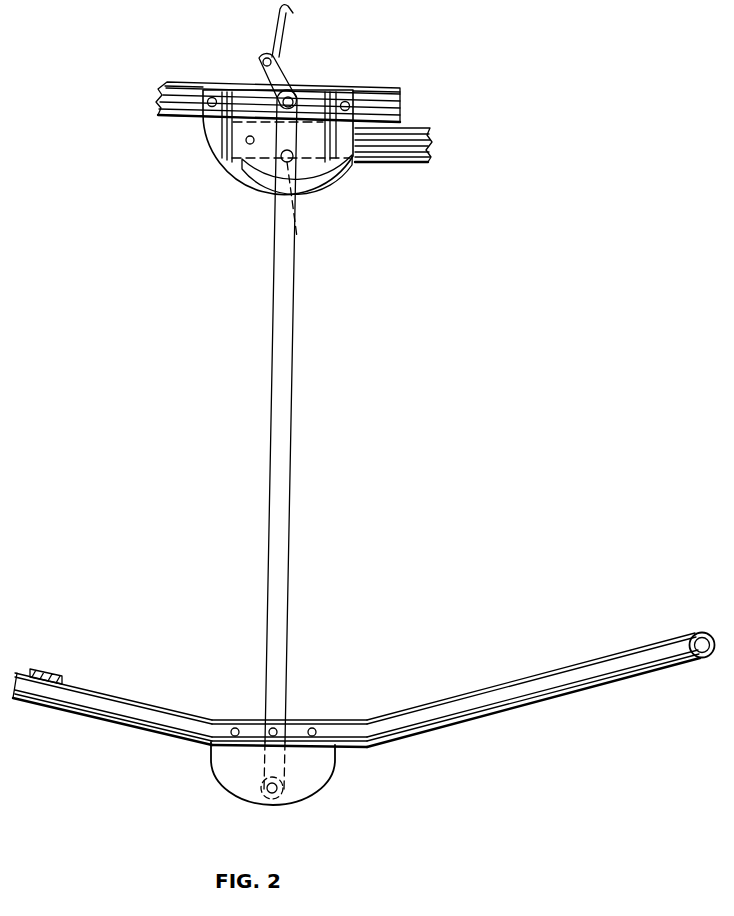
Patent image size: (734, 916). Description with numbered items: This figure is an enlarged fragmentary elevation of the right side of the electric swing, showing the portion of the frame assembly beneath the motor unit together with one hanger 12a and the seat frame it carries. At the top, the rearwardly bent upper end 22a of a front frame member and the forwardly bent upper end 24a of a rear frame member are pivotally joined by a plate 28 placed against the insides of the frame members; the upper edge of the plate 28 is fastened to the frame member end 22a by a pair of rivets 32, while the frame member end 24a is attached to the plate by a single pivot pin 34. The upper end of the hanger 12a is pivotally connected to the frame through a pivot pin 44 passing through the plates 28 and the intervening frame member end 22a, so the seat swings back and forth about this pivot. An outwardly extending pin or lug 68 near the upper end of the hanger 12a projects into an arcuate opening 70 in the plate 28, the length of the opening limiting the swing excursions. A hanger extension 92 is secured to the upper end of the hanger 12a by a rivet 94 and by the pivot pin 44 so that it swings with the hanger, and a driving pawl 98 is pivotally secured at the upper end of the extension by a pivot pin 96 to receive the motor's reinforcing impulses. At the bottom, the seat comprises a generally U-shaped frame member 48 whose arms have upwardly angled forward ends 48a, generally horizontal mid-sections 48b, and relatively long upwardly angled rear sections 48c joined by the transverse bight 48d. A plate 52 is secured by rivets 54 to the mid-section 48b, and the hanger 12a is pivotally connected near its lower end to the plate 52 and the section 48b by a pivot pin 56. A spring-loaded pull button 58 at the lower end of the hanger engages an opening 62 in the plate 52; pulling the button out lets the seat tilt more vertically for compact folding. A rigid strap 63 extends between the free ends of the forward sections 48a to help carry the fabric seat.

The hanger 12a is at (282, 473).
The upper end of front frame member 22a is at (168, 92).
The upper end of rear frame member 24a is at (400, 143).
The plate 28 is at (237, 172).
The rivets 32 is at (211, 97).
The pivot pin 34 is at (246, 142).
The pivot pin 44 is at (292, 98).
The U-shaped frame member 48 is at (364, 669).
The forward end of frame member 48a is at (147, 700).
The mid-section of frame member 48b is at (348, 720).
The rear section of frame member 48c is at (538, 677).
The transverse bight 48d is at (690, 630).
The plate 52 is at (218, 756).
The rivets 54 is at (235, 727).
The pivot pin 56 is at (275, 728).
The spring-loaded pull button 58 is at (261, 788).
The opening 62 is at (264, 797).
The rigid strap 63 is at (60, 680).
The pin or lug 68 is at (295, 233).
The arcuate opening 70 is at (260, 178).
The hanger extension 92 is at (283, 116).
The rivet 94 is at (296, 164).
The pivot pin 96 is at (278, 60).
The driving pawl 98 is at (287, 26).